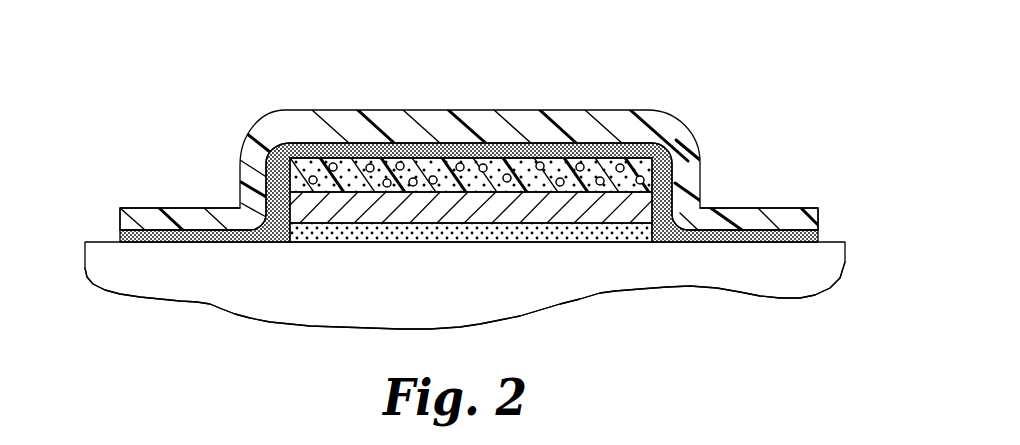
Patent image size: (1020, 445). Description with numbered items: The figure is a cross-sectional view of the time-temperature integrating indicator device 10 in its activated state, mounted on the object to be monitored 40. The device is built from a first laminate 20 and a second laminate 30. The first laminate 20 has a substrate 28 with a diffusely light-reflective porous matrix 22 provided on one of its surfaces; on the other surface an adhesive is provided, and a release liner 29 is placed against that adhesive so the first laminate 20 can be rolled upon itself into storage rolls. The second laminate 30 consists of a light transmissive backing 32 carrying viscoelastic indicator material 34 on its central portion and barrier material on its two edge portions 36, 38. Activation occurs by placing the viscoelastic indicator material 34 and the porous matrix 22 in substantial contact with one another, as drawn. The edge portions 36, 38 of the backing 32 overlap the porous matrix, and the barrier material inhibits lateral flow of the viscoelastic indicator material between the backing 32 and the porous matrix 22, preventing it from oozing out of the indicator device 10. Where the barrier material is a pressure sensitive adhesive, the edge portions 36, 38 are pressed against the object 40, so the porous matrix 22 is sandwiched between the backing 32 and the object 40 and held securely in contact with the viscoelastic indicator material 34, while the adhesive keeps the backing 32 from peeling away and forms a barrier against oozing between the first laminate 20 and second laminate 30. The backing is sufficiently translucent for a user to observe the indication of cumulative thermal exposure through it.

The time-temperature integrating indicator device 10 is at (471, 189).
The first laminate 20 is at (612, 248).
The diffusely light-reflective porous matrix 22 is at (305, 165).
The substrate 28 is at (630, 203).
The release liner 29 is at (343, 233).
The second laminate 30 is at (394, 107).
The light transmissive backing 32 is at (572, 118).
The viscoelastic indicator material 34 is at (468, 152).
The edge portion 36 is at (818, 238).
The edge portion 38 is at (120, 237).
The object to be monitored 40 is at (202, 290).